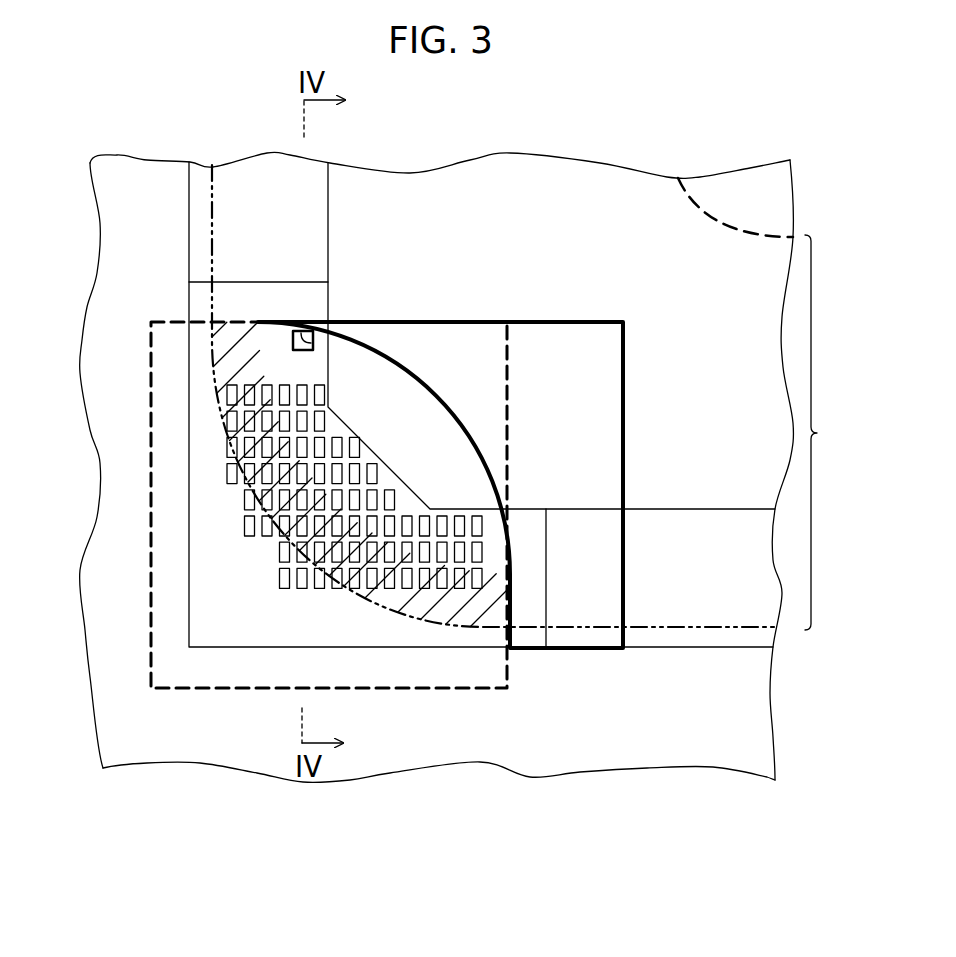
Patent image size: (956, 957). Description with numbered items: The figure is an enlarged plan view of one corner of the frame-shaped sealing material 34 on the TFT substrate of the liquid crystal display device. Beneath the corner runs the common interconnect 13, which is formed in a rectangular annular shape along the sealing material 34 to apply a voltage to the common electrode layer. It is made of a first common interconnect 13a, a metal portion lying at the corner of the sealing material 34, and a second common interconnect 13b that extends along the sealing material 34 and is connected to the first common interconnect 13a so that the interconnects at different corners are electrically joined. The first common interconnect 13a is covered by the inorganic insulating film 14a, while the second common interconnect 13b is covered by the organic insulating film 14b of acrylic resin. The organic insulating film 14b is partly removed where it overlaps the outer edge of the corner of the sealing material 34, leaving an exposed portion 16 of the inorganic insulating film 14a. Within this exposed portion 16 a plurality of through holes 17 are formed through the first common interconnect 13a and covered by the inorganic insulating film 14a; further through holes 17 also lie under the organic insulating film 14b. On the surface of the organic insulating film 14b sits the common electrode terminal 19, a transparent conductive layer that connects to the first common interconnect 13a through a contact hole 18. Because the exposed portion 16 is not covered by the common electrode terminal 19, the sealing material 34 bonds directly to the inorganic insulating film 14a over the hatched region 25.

The common interconnect 13 is at (495, 461).
The first common interconnect 13a is at (385, 628).
The second common interconnect 13b is at (677, 633).
The inorganic insulating film 14a is at (197, 672).
The organic insulating film 14b is at (752, 712).
The exposed portion 16 is at (329, 579).
The through holes 17 is at (335, 454).
The contact hole 18 is at (313, 342).
The common electrode terminal 19 is at (494, 335).
The region 25 is at (230, 355).
The sealing material 34 is at (829, 432).